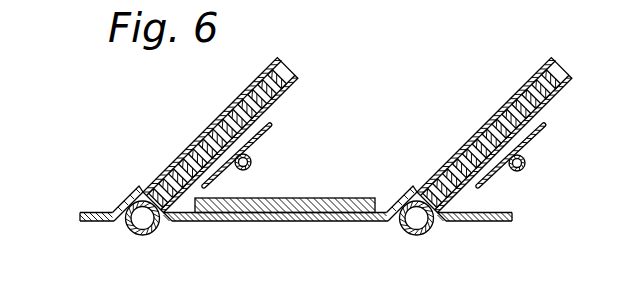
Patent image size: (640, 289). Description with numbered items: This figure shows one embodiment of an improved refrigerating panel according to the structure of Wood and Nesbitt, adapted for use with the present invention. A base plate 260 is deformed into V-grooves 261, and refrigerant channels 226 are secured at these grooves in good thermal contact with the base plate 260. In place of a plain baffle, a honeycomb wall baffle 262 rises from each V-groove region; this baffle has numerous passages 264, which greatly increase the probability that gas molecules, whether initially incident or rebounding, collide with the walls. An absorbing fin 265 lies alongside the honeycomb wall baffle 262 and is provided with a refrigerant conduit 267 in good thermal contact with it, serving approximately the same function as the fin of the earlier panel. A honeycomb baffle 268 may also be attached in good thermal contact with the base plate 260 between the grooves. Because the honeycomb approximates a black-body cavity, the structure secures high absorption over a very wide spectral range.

The refrigerant channels 226 is at (151, 233).
The base plate 260 is at (95, 213).
The V-grooves 261 is at (135, 190).
The honeycomb wall baffle 262 is at (366, 117).
The passages 264 is at (214, 123).
The absorbing fin 265 is at (272, 123).
The refrigerant conduit 267 is at (251, 158).
The honeycomb baffle 268 is at (316, 188).